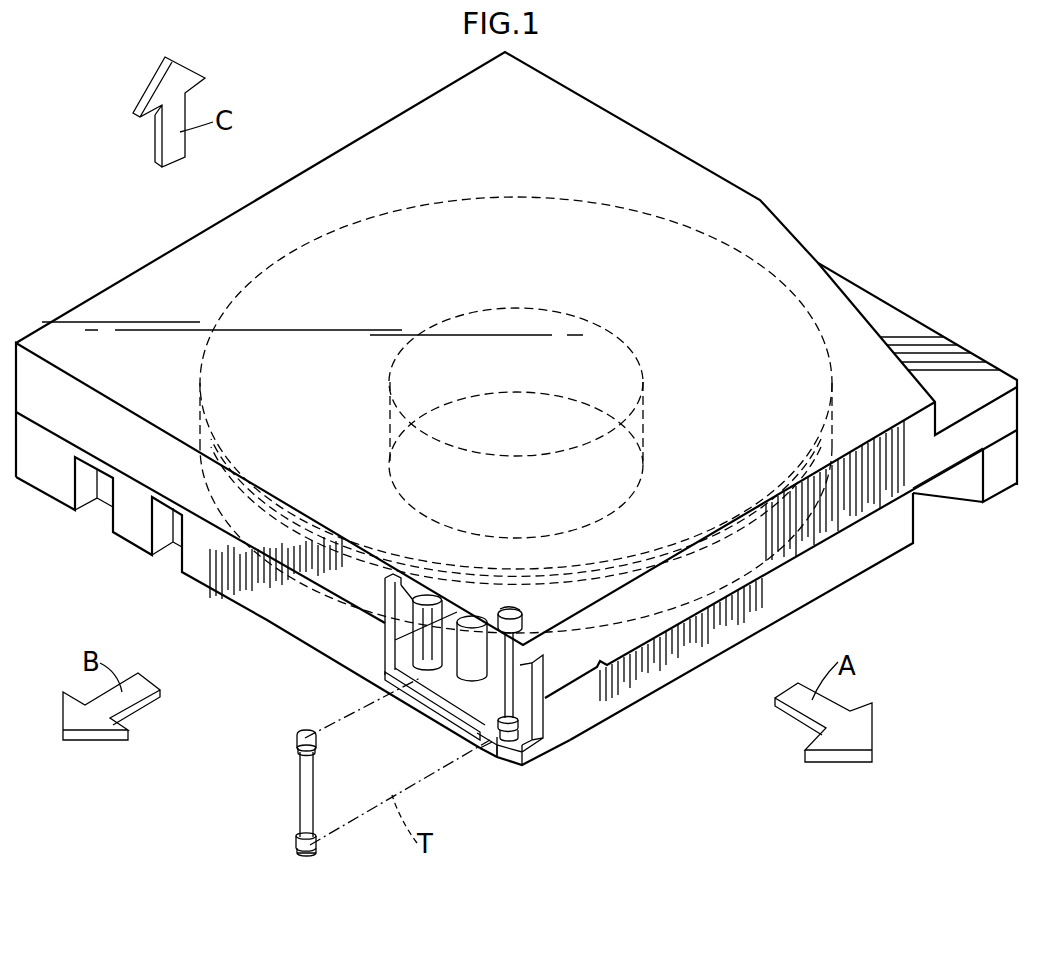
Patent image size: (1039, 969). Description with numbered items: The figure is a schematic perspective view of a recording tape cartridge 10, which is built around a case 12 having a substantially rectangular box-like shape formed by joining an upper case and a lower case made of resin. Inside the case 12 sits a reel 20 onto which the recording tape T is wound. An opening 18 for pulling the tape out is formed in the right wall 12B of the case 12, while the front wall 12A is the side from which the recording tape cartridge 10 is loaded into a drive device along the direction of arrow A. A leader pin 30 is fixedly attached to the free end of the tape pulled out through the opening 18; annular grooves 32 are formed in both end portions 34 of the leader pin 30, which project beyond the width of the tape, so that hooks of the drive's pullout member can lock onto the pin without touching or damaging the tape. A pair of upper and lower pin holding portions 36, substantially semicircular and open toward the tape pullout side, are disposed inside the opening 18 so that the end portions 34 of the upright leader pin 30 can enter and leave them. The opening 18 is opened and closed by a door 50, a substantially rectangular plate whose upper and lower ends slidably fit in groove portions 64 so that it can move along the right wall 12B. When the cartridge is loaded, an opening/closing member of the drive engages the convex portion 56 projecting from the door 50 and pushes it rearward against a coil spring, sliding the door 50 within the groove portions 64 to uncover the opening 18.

The recording tape cartridge 10 is at (516, 474).
The case 12 is at (516, 408).
The front wall 12A is at (822, 578).
The right wall 12B is at (135, 526).
The opening 18 is at (392, 680).
The reel 20 is at (516, 196).
The leader pin 30 is at (437, 764).
The annular grooves 32 is at (298, 752).
The end portions 34 is at (297, 736).
The pin holding portions 36 is at (484, 750).
The door 50 is at (378, 659).
The convex portion 56 is at (385, 652).
The groove portions 64 is at (504, 612).